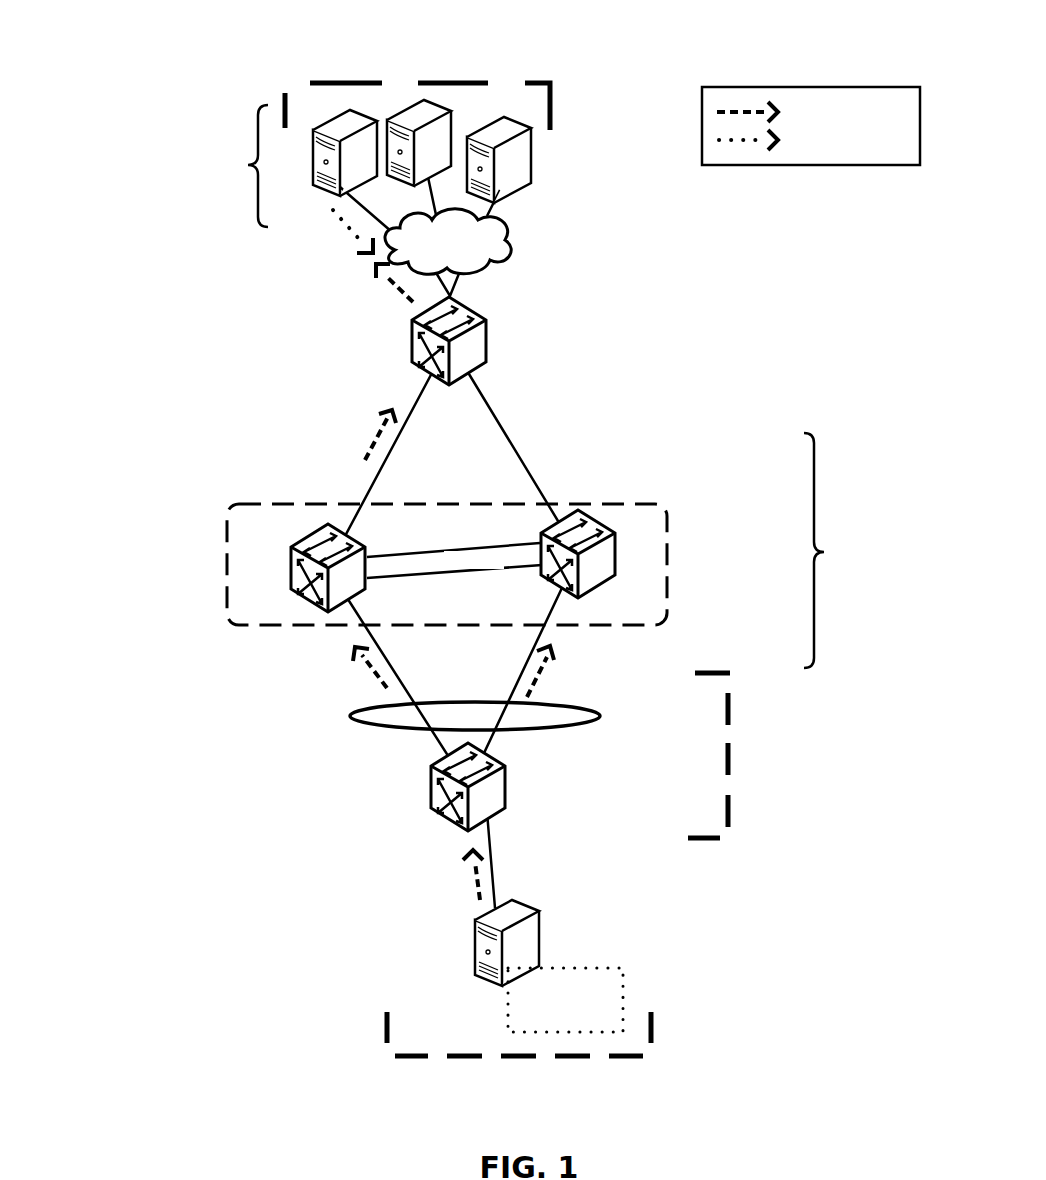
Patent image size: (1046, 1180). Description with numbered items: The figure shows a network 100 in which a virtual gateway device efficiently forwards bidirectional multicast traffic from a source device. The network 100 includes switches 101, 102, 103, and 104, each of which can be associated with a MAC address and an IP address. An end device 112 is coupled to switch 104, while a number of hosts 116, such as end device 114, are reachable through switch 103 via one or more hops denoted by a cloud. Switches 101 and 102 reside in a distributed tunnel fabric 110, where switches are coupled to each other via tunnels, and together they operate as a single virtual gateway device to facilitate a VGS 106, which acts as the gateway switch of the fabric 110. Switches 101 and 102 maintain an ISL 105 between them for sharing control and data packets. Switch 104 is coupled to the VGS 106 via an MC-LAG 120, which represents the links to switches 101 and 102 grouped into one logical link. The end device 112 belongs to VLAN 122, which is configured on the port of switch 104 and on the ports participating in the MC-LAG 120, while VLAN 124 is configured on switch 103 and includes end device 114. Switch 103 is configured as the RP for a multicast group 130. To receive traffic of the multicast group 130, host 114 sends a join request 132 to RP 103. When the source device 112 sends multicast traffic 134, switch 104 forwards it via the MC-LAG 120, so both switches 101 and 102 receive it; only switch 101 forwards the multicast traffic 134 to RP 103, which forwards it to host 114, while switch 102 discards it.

The network 100 is at (160, 98).
The switch 101 is at (291, 558).
The switch 102 is at (617, 560).
The switch (RP) 103 is at (488, 323).
The switch 104 is at (507, 790).
The ISL 105 is at (525, 566).
The VGS 106 is at (613, 627).
The distributed tunnel fabric 110 is at (591, 574).
The end device (source device) 112 is at (475, 955).
The end device (host) 114 is at (313, 160).
The hosts 116 is at (354, 163).
The MC-LAG 120 is at (350, 717).
The VLAN 122 is at (345, 1045).
The VLAN 124 is at (466, 82).
The multicast group 130 is at (565, 1000).
The join request 132 is at (343, 228).
The multicast traffic 134 is at (375, 437).